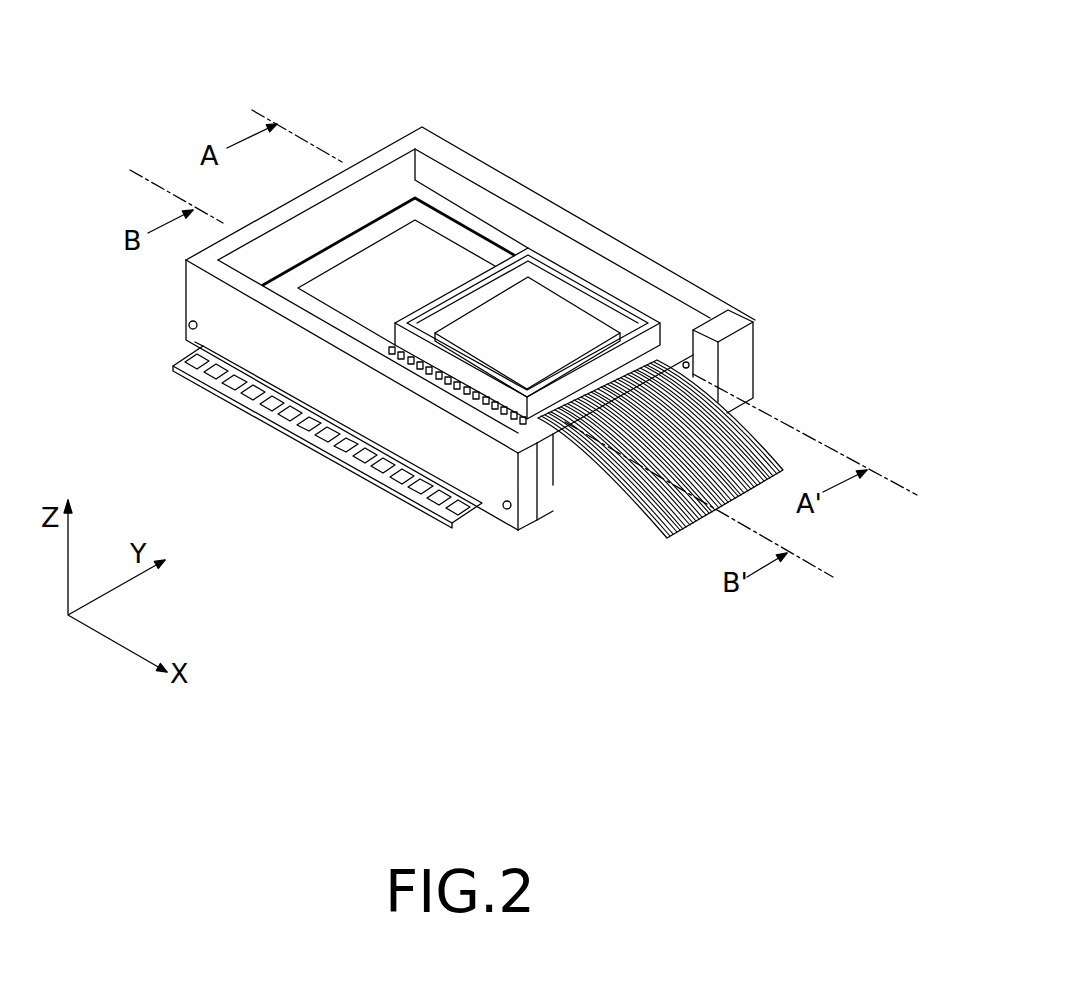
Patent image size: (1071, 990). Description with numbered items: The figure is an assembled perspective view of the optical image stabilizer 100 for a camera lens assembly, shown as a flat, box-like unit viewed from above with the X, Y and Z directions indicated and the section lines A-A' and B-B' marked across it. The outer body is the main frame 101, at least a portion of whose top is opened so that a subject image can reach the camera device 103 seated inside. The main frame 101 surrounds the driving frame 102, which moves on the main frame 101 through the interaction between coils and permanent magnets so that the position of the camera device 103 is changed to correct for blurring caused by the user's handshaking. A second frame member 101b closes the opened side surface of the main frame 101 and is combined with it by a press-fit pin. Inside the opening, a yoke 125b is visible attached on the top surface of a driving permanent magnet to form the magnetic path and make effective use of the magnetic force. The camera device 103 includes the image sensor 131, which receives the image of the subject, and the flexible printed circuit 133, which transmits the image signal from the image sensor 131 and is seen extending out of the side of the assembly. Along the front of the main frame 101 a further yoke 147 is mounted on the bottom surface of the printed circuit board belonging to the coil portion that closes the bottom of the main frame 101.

The optical image stabilizer 100 is at (700, 31).
The main frame 101 is at (645, 230).
The second frame member 101b is at (497, 495).
The driving frame 102 is at (466, 218).
The camera device 103 is at (593, 287).
The yoke 125b is at (427, 240).
The image sensor 131 is at (545, 297).
The flexible printed circuit 133 is at (657, 500).
The yoke 147 is at (248, 412).